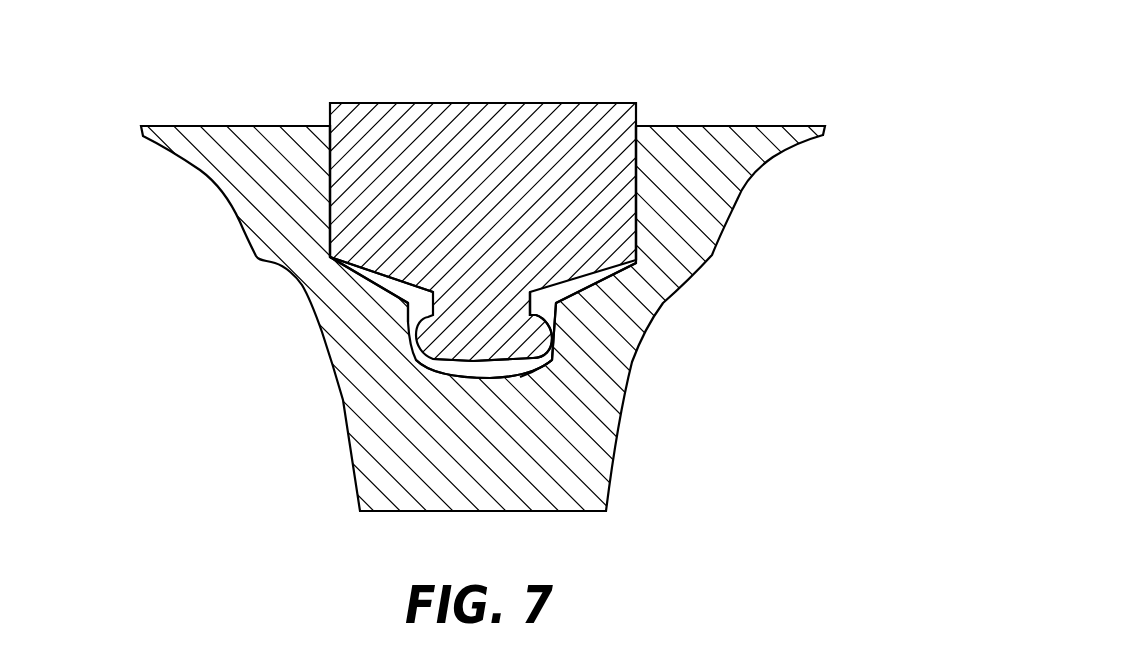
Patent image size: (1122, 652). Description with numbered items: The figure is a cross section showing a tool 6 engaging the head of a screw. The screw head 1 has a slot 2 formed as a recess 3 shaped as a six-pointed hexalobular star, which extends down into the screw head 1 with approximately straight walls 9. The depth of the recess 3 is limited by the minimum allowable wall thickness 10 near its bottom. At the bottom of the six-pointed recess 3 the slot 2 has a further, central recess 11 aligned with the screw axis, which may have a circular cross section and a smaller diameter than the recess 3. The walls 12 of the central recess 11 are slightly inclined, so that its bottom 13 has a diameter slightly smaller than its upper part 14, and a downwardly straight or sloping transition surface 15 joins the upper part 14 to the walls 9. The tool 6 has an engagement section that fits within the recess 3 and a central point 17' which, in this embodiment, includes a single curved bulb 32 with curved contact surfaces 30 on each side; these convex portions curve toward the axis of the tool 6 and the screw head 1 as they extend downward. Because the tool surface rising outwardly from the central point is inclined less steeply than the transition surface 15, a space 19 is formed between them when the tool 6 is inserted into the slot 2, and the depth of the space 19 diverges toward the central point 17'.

The screw head 1 is at (681, 203).
The slot 2 is at (637, 126).
The recess 3 is at (316, 187).
The tool 6 is at (571, 138).
The walls of the recess 9 is at (638, 190).
The minimum allowable wall thickness 10 is at (324, 262).
The central recess 11 is at (555, 347).
The walls of the central recess 12 is at (556, 350).
The bottom of the central recess 13 is at (535, 378).
The upper part of the central recess 14 is at (410, 322).
The transition surface 15 is at (408, 306).
The undercut 17' is at (618, 298).
The space 19 is at (658, 303).
The contact surfaces 30 is at (414, 352).
The curved bulb 32 is at (483, 340).